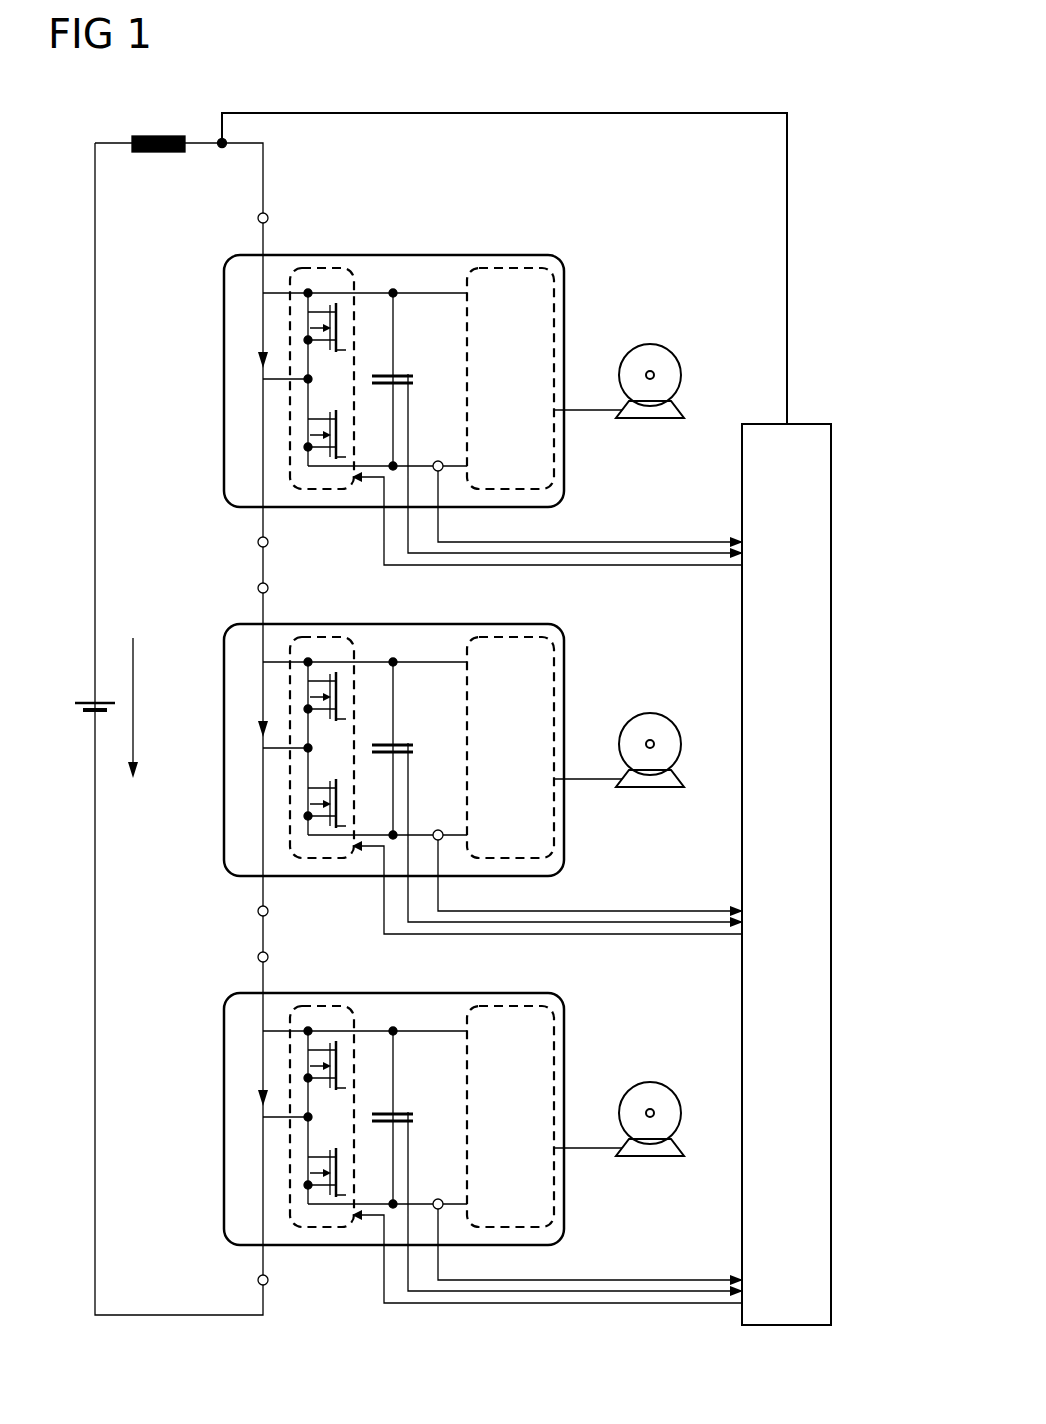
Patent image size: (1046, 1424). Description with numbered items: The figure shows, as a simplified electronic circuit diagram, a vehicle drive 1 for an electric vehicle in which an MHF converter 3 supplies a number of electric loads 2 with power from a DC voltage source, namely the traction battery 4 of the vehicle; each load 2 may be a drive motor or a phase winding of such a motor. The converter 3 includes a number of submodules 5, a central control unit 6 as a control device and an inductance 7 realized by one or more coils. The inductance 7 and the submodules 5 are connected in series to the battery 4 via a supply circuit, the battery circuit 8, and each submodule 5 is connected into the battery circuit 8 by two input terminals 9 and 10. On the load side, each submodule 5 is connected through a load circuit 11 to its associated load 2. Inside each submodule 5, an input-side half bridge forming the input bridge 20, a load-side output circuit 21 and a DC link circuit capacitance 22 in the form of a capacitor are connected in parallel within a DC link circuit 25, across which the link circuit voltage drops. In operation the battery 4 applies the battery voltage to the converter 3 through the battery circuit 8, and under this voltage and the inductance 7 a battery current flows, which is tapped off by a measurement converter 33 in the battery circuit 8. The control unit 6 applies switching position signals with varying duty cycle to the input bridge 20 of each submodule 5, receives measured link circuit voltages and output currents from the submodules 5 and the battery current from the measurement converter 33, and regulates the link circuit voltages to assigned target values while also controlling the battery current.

The vehicle drive 1 is at (733, 98).
The electric load 2 is at (660, 1082).
The converter 3 is at (178, 103).
The battery 4 is at (88, 702).
The submodule 5 is at (224, 1110).
The central control unit 6 is at (812, 424).
The inductance 7 is at (155, 152).
The battery circuit 8 is at (95, 500).
The input terminal 9 is at (268, 214).
The input terminal 10 is at (258, 542).
The load circuit 11 is at (590, 410).
The input bridge 20 is at (318, 268).
The output circuit 21 is at (512, 268).
The DC link circuit capacitance 22 is at (408, 1112).
The DC link circuit 25 is at (370, 293).
The measurement converter 33 is at (222, 150).